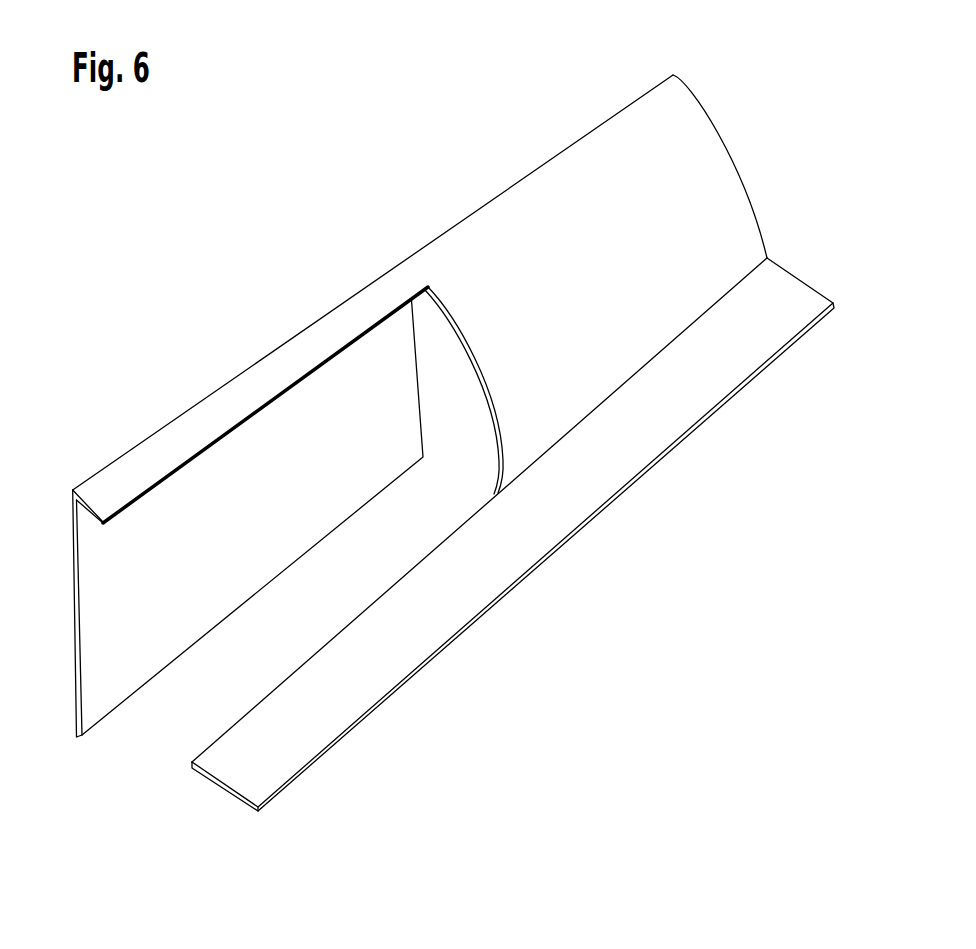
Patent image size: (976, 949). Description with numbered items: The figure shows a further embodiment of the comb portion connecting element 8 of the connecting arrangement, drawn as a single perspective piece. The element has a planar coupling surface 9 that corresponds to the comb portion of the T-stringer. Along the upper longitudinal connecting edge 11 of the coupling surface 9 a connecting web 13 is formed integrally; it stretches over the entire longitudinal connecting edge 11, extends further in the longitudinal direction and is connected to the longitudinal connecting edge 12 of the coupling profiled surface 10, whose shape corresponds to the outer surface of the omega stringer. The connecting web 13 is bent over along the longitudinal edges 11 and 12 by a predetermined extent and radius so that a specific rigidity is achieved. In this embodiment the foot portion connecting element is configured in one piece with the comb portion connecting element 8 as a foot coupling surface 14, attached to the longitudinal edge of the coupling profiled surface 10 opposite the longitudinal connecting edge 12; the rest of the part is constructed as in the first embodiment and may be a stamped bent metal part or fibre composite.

The comb portion connecting element 8 is at (80, 667).
The coupling surface 9 is at (163, 578).
The coupling profiled surface 10 is at (659, 142).
The longitudinal connecting edge 11 is at (163, 427).
The longitudinal connecting edge 12 is at (538, 168).
The connecting web 13 is at (368, 295).
The foot coupling surface 14 is at (485, 573).